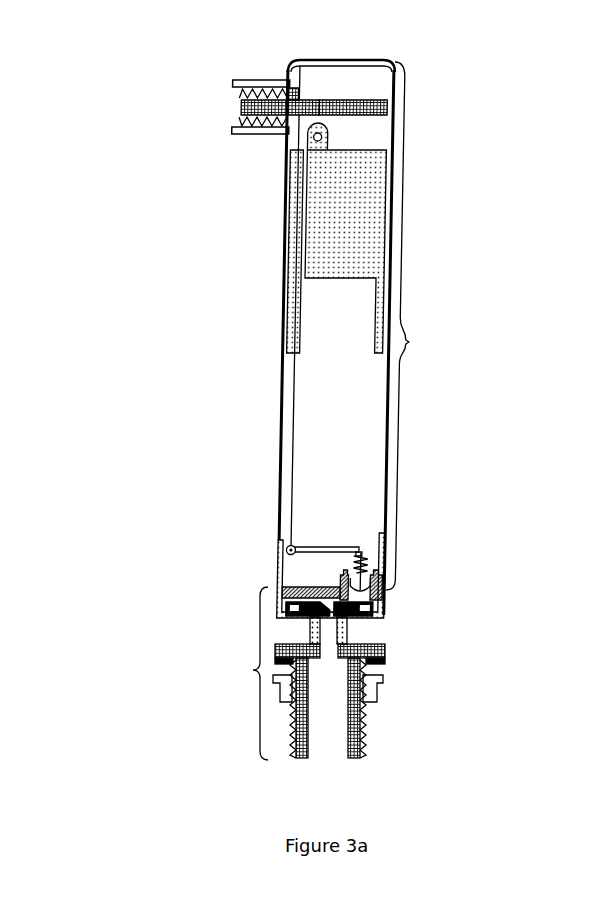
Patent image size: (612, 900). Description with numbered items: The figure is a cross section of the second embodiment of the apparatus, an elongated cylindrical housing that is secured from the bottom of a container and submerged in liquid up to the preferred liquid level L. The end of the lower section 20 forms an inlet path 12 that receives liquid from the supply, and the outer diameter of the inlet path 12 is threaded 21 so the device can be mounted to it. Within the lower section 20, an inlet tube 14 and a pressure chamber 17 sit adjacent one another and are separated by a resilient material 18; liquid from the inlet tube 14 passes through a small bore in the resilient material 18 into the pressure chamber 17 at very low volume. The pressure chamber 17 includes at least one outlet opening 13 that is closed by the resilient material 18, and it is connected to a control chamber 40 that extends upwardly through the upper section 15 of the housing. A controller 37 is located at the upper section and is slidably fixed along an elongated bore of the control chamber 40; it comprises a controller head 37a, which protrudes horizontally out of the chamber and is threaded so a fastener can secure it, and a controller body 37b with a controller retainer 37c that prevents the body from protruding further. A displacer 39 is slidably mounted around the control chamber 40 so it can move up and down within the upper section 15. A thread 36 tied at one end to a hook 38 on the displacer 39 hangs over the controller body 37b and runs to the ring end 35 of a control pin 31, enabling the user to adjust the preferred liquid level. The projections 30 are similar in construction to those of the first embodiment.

The inlet path 12 is at (328, 698).
The outlet opening 13 is at (303, 620).
The inlet tube 14 is at (328, 633).
The upper section 15 is at (421, 341).
The pressure chamber 17 is at (300, 600).
The resilient material 18 is at (380, 607).
The lower section 20 is at (296, 673).
The thread 21 is at (293, 725).
The projections 30 is at (383, 563).
The control pin 31 is at (337, 549).
The ring end 35 is at (285, 550).
The thread 36 is at (295, 410).
The controller 37 is at (240, 108).
The controller head 37a is at (267, 100).
The controller body 37b is at (360, 107).
The controller retainer 37c is at (295, 95).
The hook 38 is at (325, 134).
The displacer 39 is at (348, 228).
The control chamber 40 is at (340, 392).
The preferred liquid level L is at (405, 152).